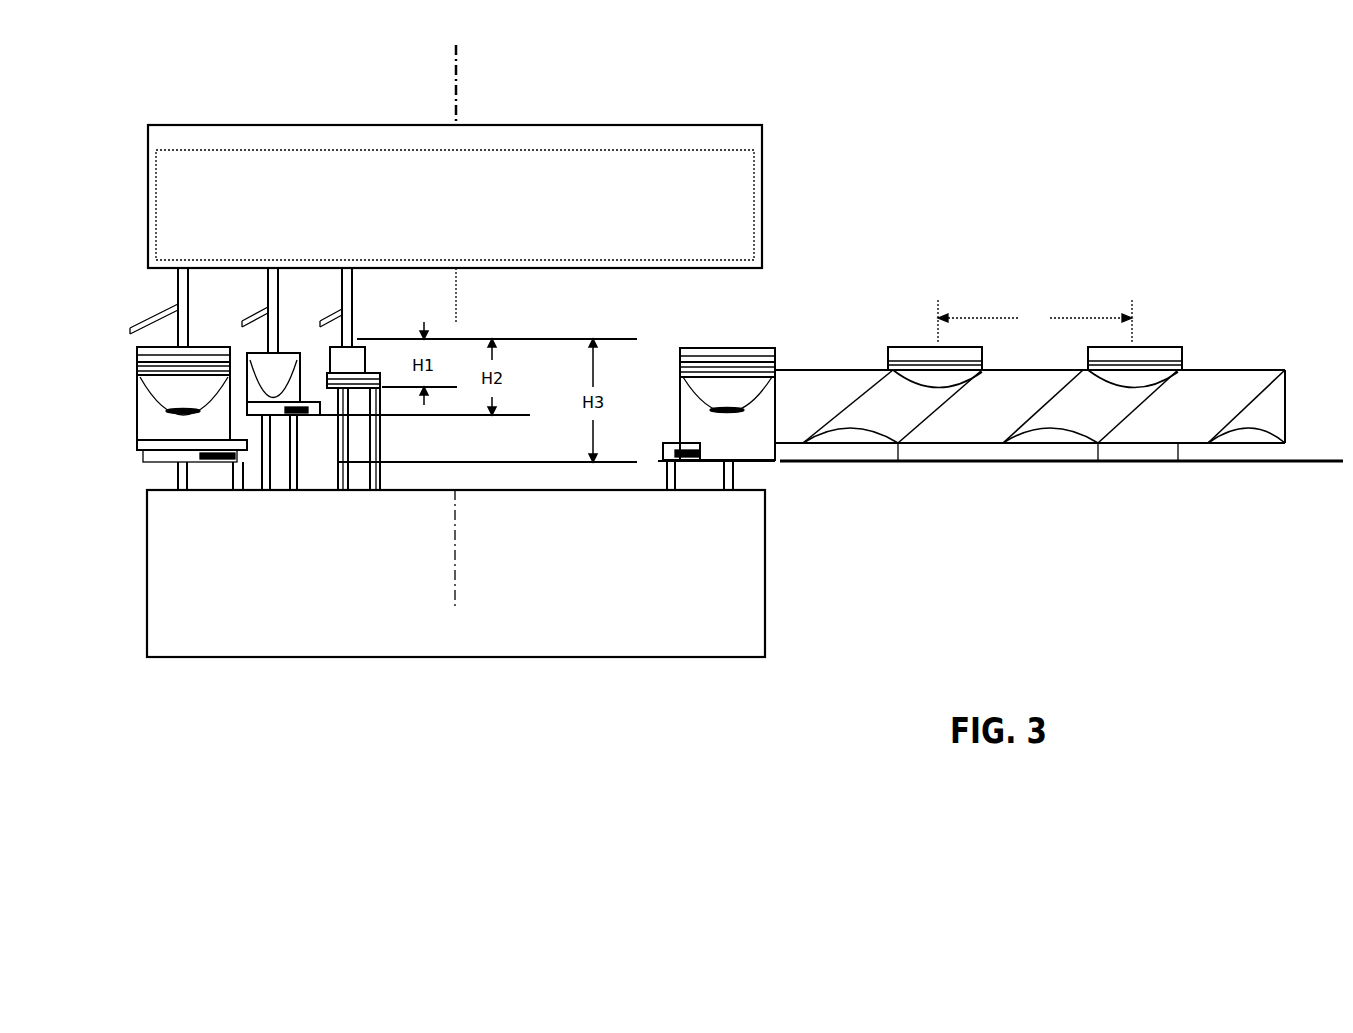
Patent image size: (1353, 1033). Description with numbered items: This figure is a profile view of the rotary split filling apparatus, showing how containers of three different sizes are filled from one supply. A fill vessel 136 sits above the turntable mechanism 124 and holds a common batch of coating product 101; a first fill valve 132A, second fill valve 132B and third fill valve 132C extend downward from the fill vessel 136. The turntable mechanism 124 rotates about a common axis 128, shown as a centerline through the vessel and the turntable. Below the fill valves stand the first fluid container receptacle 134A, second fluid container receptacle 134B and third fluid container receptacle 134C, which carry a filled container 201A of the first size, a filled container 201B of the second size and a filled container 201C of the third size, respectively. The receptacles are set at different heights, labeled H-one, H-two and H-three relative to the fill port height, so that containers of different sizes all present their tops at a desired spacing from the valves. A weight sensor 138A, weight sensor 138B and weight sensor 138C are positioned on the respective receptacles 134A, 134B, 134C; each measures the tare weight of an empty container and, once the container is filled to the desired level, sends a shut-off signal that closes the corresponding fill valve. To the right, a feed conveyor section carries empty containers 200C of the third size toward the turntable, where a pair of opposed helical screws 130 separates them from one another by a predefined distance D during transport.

The coating product 101 is at (537, 163).
The fill vessel 136 is at (724, 136).
The first fill valve 132A is at (355, 330).
The second fill valve 132B is at (282, 330).
The third fill valve 132C is at (198, 330).
The filled container of the first size 201A is at (340, 358).
The filled container of the second size 201B is at (233, 365).
The filled container of the third size 201C is at (163, 388).
The empty container of the third size 200C is at (768, 355).
The first fluid container receptacle 134A is at (336, 475).
The second fluid container receptacle 134B is at (265, 470).
The third fluid container receptacle 134C is at (171, 468).
The first weight sensor 138A is at (356, 470).
The second weight sensor 138B is at (292, 416).
The third weight sensor 138C is at (218, 462).
The turntable mechanism 124 is at (641, 583).
The common axis 128 is at (455, 548).
The helical screws 130 is at (977, 423).